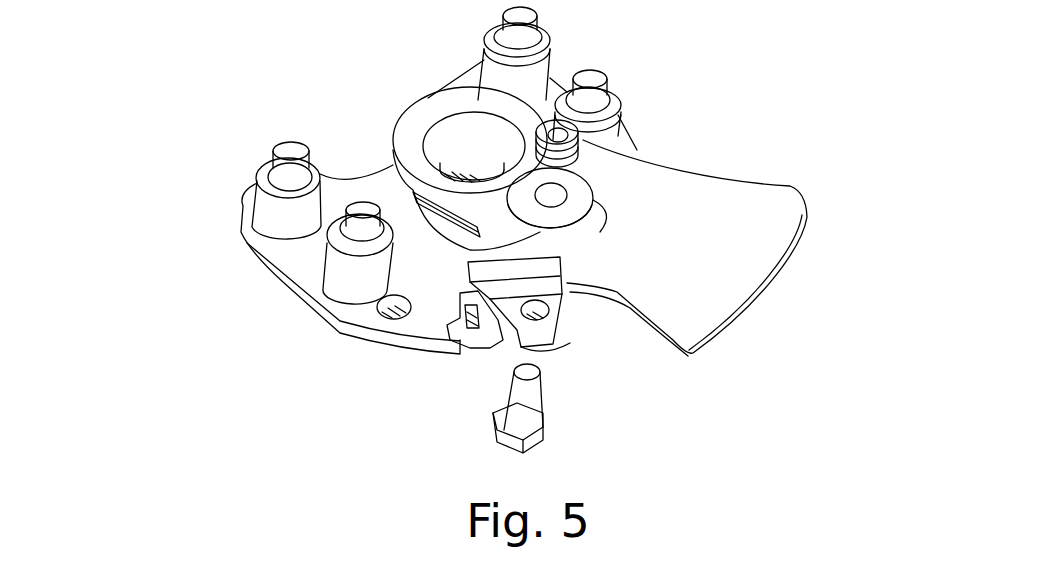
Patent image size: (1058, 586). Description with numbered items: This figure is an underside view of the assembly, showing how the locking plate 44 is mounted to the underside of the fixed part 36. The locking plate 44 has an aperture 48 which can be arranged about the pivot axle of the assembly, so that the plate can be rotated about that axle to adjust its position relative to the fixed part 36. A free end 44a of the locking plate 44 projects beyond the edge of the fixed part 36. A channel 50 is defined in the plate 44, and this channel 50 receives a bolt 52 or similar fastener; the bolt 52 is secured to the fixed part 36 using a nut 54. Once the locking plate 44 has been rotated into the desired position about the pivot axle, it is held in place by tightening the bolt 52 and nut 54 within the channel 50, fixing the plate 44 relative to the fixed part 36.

The fixed part 36 is at (320, 263).
The locking plate 44 is at (658, 282).
The free end 44a is at (815, 276).
The aperture 48 is at (478, 148).
The channel 50 is at (565, 245).
The bolt 52 is at (513, 400).
The nut 54 is at (583, 148).